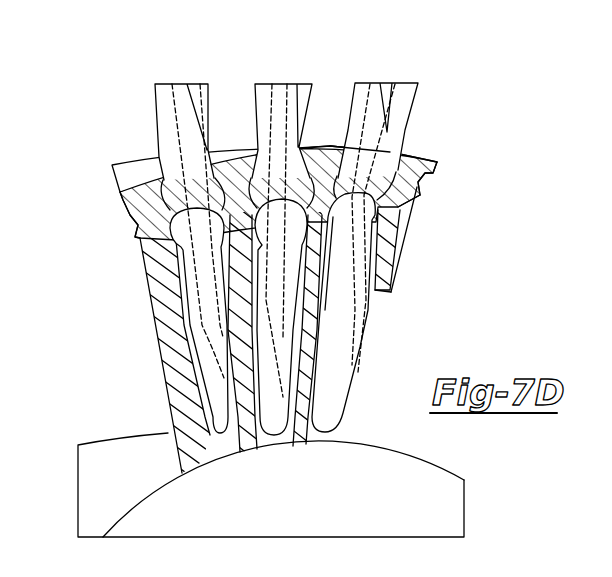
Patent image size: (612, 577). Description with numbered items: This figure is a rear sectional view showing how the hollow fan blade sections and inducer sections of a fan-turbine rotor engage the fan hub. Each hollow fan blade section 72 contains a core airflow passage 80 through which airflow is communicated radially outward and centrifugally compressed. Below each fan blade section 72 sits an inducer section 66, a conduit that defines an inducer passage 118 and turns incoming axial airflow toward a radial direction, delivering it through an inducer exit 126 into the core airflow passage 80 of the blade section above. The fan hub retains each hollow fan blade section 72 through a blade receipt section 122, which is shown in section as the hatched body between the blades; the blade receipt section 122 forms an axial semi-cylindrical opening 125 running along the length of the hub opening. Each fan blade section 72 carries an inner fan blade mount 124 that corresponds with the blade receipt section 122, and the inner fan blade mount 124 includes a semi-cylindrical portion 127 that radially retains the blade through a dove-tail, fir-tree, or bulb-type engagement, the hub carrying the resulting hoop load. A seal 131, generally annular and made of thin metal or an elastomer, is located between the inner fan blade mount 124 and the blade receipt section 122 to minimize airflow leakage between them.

The inducer section 66 is at (323, 384).
The hollow fan blade section 72 is at (362, 102).
The core airflow passage 80 is at (177, 138).
The inducer passage 118 is at (193, 280).
The blade receipt section 122 is at (190, 408).
The inner fan blade mount 124 is at (415, 185).
The axial semi-cylindrical opening 125 is at (130, 218).
The inducer exit 126 is at (408, 198).
The semi-cylindrical portion 127 is at (372, 160).
The seal 131 is at (410, 260).